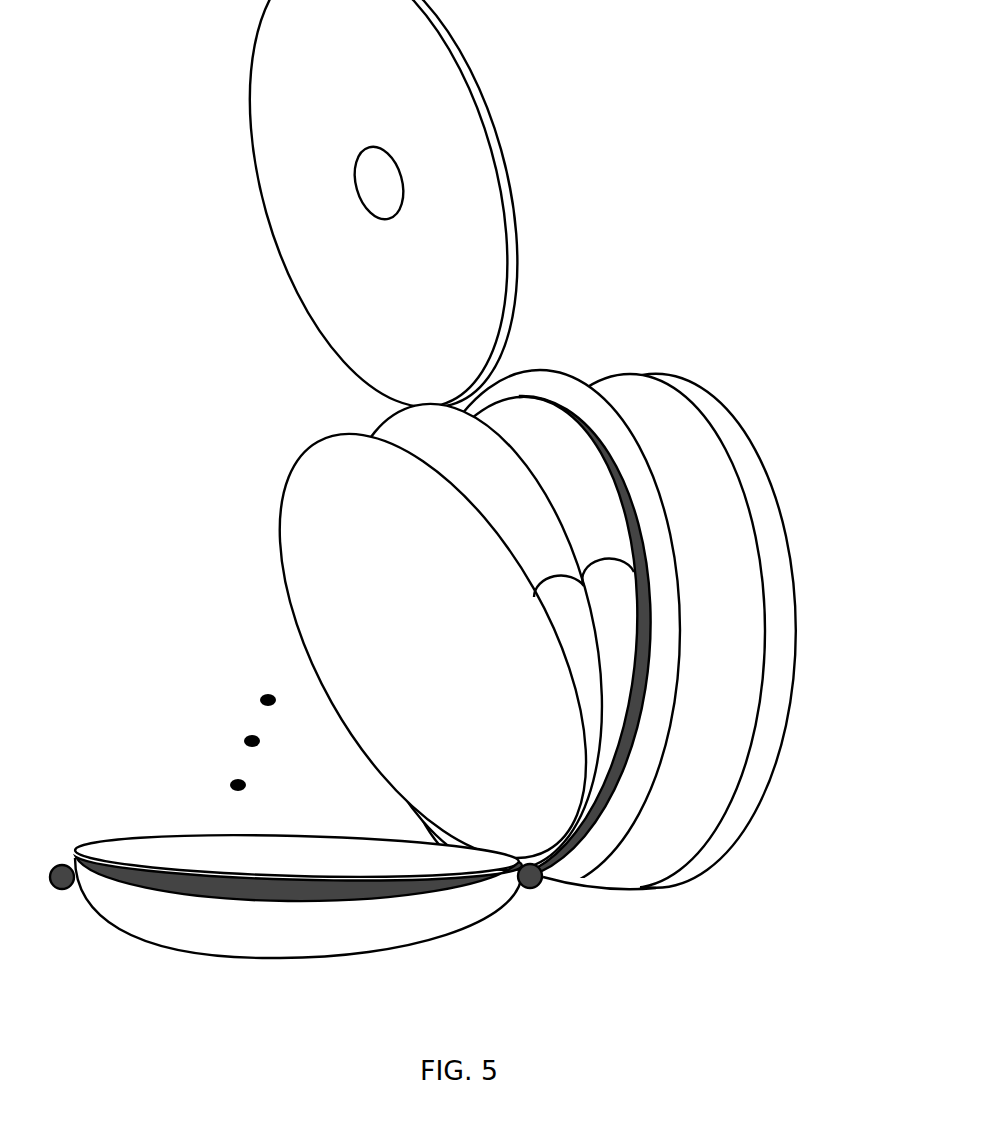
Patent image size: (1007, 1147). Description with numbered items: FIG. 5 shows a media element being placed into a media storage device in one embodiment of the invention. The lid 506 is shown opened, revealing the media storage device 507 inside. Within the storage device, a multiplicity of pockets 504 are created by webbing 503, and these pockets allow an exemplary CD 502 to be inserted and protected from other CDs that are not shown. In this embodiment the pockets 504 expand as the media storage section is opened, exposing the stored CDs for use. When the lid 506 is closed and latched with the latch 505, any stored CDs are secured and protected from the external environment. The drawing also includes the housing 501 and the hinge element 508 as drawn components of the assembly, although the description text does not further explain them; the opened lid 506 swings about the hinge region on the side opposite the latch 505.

The housing 501 is at (700, 452).
The CD 502 is at (445, 128).
The webbing 503 is at (618, 603).
The pockets 504 is at (548, 465).
The latch 505 is at (64, 863).
The lid 506 is at (350, 927).
The media storage device 507 is at (304, 545).
The hinge pivot 508 is at (537, 883).